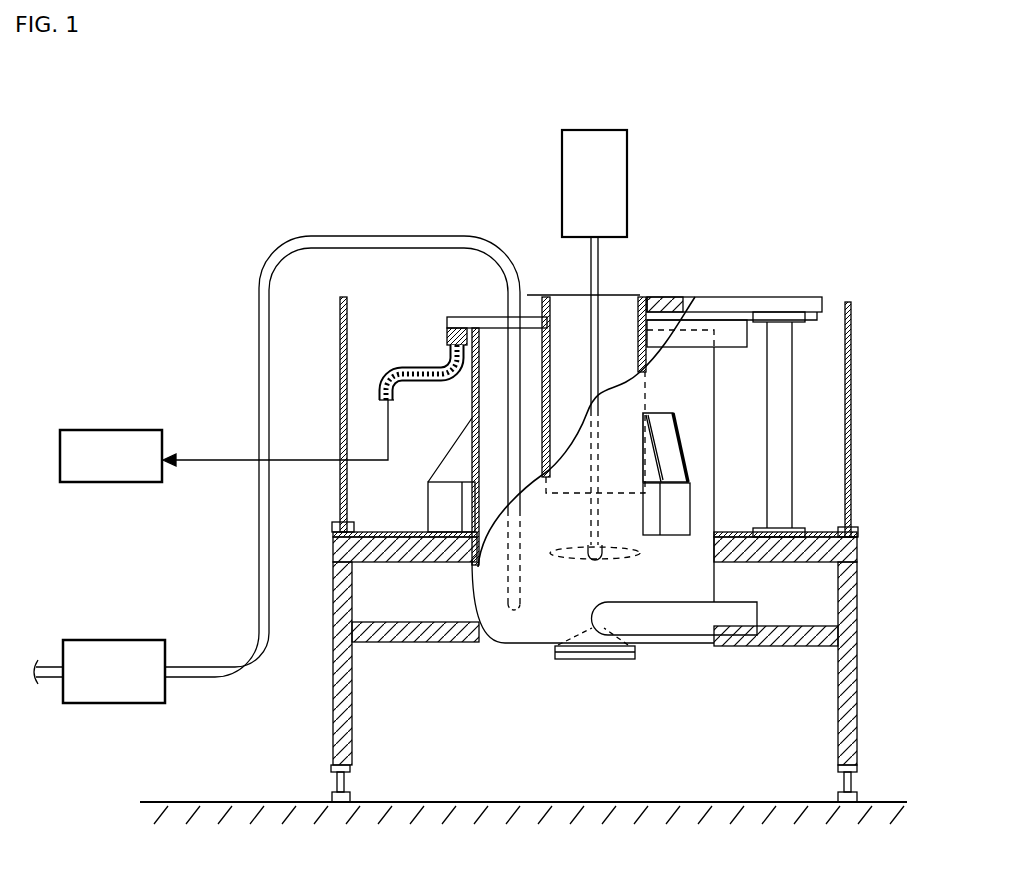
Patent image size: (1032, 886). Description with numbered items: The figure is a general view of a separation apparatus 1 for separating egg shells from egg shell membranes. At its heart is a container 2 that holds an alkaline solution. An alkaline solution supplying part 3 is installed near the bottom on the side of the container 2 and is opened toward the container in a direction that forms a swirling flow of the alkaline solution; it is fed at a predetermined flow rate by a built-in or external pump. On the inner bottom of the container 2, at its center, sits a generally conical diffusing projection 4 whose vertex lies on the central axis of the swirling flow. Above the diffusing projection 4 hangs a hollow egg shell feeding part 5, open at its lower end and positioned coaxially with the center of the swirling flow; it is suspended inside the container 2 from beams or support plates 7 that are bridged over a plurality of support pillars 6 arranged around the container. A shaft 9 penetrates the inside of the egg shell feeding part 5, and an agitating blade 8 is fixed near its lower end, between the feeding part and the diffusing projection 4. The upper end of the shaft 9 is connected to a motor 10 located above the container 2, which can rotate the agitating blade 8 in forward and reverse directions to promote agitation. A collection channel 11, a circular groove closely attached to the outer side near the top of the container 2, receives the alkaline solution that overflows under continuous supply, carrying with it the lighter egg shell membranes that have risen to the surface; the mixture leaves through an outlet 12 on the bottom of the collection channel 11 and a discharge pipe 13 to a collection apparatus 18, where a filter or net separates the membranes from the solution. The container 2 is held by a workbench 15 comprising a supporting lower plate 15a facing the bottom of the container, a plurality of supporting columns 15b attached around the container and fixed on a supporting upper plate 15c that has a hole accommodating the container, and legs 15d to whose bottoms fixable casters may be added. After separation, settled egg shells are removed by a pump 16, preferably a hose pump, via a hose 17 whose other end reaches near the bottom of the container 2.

The separation apparatus 1 is at (298, 155).
The container 2 is at (533, 630).
The alkaline solution supplying part 3 is at (720, 623).
The diffusing projection 4 is at (592, 641).
The egg shell feeding part 5 is at (640, 365).
The support pillars 6 is at (787, 382).
The support plates 7 is at (752, 300).
The agitating blade 8 is at (627, 558).
The shaft 9 is at (588, 322).
The motor 10 is at (628, 153).
The collection channel 11 is at (460, 322).
The outlet 12 is at (438, 355).
The discharge pipe 13 is at (418, 383).
The workbench 15 is at (588, 549).
The supporting lower plate 15a is at (428, 643).
The supporting columns 15b is at (443, 512).
The supporting upper plate 15c is at (410, 562).
The legs 15d is at (340, 740).
The pump 16 is at (143, 653).
The hose 17 is at (267, 412).
The collection apparatus 18 is at (77, 440).